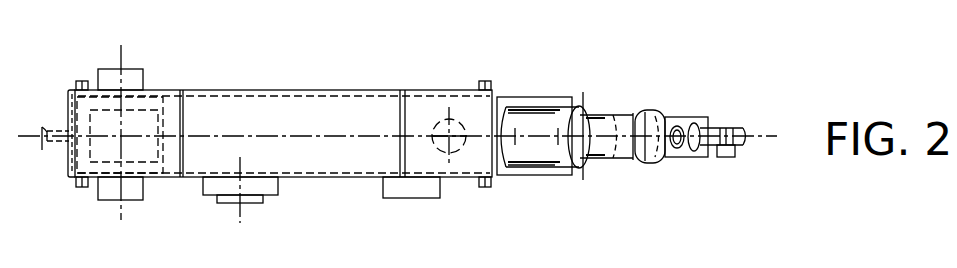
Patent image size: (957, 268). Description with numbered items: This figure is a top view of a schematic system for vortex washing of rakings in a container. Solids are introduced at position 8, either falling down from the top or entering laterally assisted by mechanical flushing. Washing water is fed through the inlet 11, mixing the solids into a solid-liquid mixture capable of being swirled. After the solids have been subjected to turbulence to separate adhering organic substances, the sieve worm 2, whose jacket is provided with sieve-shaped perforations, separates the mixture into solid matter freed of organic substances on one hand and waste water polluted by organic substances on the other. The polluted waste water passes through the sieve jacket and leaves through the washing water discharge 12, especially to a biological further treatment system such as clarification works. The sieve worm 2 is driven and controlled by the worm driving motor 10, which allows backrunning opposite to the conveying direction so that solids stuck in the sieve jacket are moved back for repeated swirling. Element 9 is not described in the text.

The sieve worm 2 is at (598, 127).
The solids introduction position 8 is at (127, 77).
The support bracket 9 is at (252, 200).
The worm driving motor 10 is at (718, 130).
The inlet 11 is at (55, 132).
The washing water discharge 12 is at (457, 122).